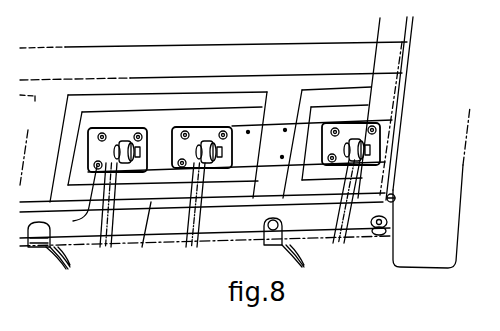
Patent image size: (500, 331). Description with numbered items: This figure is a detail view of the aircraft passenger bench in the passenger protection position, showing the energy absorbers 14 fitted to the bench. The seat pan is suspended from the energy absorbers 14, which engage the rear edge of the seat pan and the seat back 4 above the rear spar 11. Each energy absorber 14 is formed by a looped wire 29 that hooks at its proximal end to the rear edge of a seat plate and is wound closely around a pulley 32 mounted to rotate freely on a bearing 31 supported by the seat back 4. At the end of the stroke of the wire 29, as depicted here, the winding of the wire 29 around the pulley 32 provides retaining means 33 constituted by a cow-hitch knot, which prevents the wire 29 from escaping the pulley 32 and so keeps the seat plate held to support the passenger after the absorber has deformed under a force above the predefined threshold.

The seat back 4 is at (65, 72).
The rear spar 11 is at (319, 243).
The energy absorber 14 is at (231, 226).
The wire 29 is at (115, 226).
The bearing 31 is at (88, 135).
The pulley 32 is at (127, 173).
The retaining means 33 is at (144, 136).